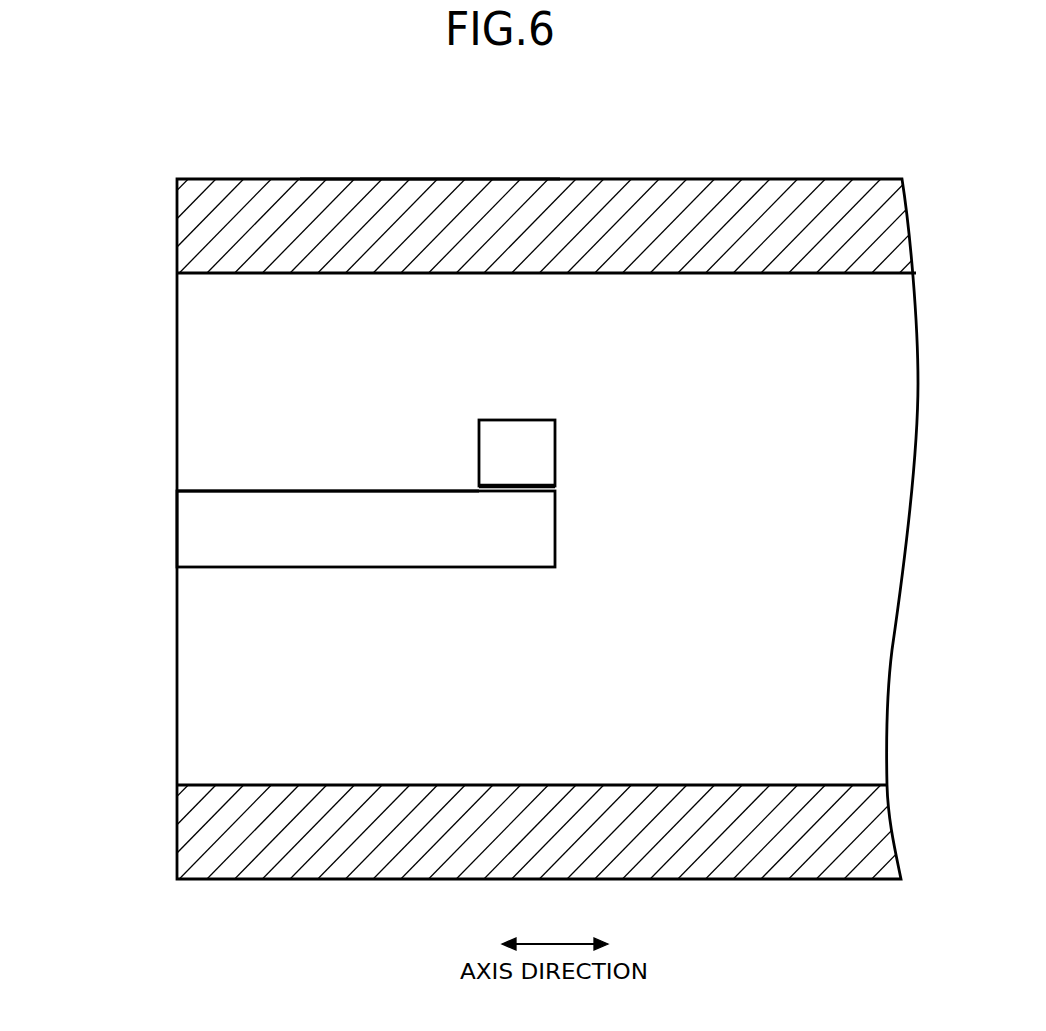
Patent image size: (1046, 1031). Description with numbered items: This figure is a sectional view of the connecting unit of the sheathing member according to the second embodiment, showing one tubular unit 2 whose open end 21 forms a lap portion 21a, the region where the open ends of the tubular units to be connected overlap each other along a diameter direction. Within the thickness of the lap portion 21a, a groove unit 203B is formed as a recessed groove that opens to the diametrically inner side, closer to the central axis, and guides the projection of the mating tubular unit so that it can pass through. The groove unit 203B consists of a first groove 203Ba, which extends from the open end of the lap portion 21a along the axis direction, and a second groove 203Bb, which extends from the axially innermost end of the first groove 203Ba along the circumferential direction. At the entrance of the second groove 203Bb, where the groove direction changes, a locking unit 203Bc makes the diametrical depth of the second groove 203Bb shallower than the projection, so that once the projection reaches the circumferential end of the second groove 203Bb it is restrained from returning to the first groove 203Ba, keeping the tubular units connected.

The tubular unit 2 is at (752, 179).
The open end 21 is at (364, 179).
The lap portion 21a is at (473, 179).
The groove unit 203B is at (222, 493).
The first groove 203Ba is at (260, 493).
The second groove 203Bb is at (480, 453).
The locking unit 203Bc is at (517, 490).